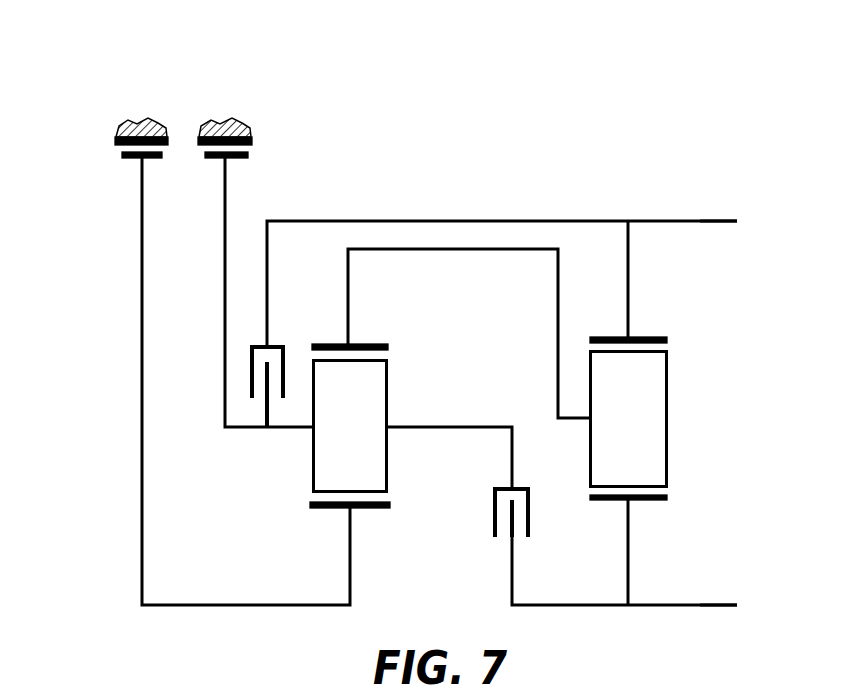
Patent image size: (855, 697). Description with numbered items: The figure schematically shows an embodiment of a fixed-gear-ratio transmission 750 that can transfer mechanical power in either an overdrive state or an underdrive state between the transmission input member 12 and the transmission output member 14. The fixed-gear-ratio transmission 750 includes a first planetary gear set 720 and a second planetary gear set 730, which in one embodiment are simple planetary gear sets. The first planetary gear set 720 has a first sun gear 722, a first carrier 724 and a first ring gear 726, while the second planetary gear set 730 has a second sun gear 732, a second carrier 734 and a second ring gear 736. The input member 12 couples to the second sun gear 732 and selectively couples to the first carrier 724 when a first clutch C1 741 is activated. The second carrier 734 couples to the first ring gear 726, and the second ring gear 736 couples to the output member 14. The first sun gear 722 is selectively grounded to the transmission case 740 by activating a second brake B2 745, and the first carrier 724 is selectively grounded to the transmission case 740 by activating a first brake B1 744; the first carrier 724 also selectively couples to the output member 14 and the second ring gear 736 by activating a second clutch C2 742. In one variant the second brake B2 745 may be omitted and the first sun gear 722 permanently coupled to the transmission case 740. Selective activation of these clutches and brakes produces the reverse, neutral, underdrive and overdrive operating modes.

The fixed-gear-ratio transmission 750 is at (552, 142).
The transmission case 740 is at (218, 120).
The second brake B2 745 is at (130, 148).
The first brake B1 744 is at (237, 148).
The second clutch C2 742 is at (250, 378).
The first clutch C1 741 is at (492, 517).
The first planetary gear set 720 is at (371, 342).
The first ring gear 726 is at (325, 343).
The first carrier 724 is at (372, 439).
The first sun gear 722 is at (365, 510).
The second planetary gear set 730 is at (646, 334).
The second ring gear 736 is at (610, 337).
The second carrier 734 is at (650, 432).
The second sun gear 732 is at (642, 501).
The transmission output member 14 is at (767, 235).
The transmission input member 12 is at (767, 618).